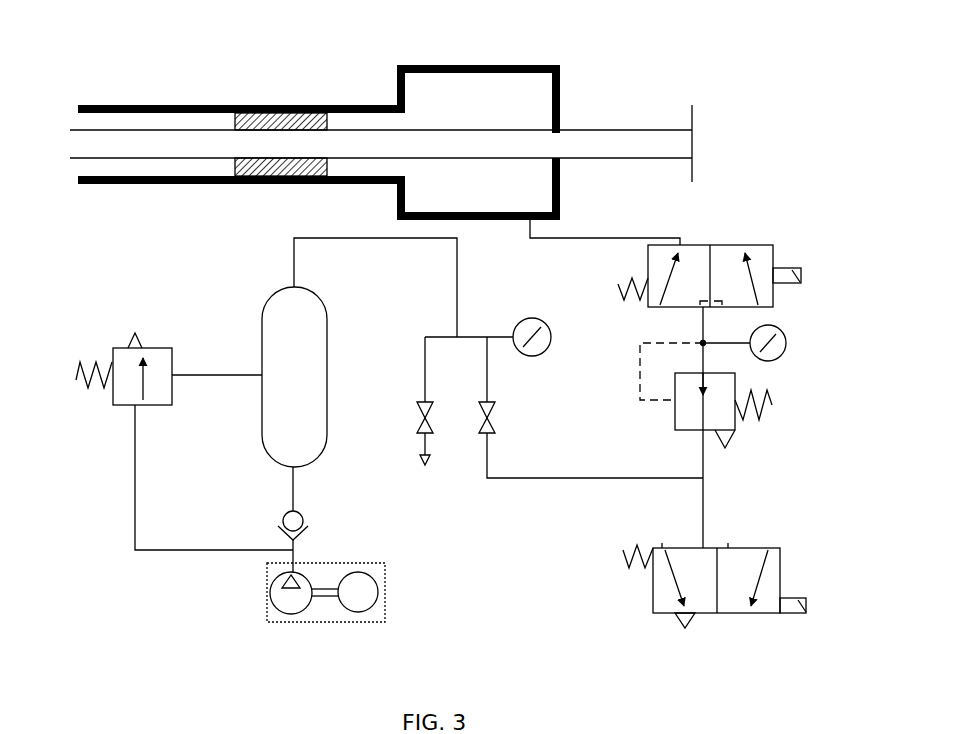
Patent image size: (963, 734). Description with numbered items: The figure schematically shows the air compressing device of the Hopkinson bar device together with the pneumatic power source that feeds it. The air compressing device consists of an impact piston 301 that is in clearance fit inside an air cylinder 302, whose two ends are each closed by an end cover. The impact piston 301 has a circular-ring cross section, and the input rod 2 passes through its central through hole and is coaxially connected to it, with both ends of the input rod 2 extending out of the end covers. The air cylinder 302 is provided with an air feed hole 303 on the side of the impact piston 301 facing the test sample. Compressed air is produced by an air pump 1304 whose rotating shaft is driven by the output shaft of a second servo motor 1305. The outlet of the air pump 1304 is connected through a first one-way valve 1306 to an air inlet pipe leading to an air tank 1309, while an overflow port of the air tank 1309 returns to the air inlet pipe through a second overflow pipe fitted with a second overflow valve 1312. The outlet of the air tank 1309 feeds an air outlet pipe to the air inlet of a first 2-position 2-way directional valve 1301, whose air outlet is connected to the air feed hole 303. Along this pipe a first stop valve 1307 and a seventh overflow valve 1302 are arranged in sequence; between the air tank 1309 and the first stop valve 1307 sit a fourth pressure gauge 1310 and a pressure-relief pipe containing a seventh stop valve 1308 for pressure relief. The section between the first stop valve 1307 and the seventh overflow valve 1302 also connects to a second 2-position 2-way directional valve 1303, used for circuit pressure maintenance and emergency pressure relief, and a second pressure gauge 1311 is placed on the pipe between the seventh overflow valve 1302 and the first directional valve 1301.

The input rod 2 is at (148, 128).
The impact piston 301 is at (278, 125).
The air cylinder 302 is at (478, 65).
The air feed hole 303 is at (560, 218).
The first 2-position 2-way directional valve 1301 is at (773, 291).
The seventh overflow valve 1302 is at (735, 428).
The second 2-position 2-way directional valve 1303 is at (780, 567).
The air pump 1304 is at (288, 593).
The second servo motor 1305 is at (352, 608).
The first one-way valve 1306 is at (283, 519).
The first stop valve 1307 is at (495, 420).
The seventh stop valve 1308 is at (417, 420).
The air tank 1309 is at (262, 303).
The fourth pressure gauge 1310 is at (540, 319).
The second pressure gauge 1311 is at (786, 343).
The second overflow valve 1312 is at (113, 348).